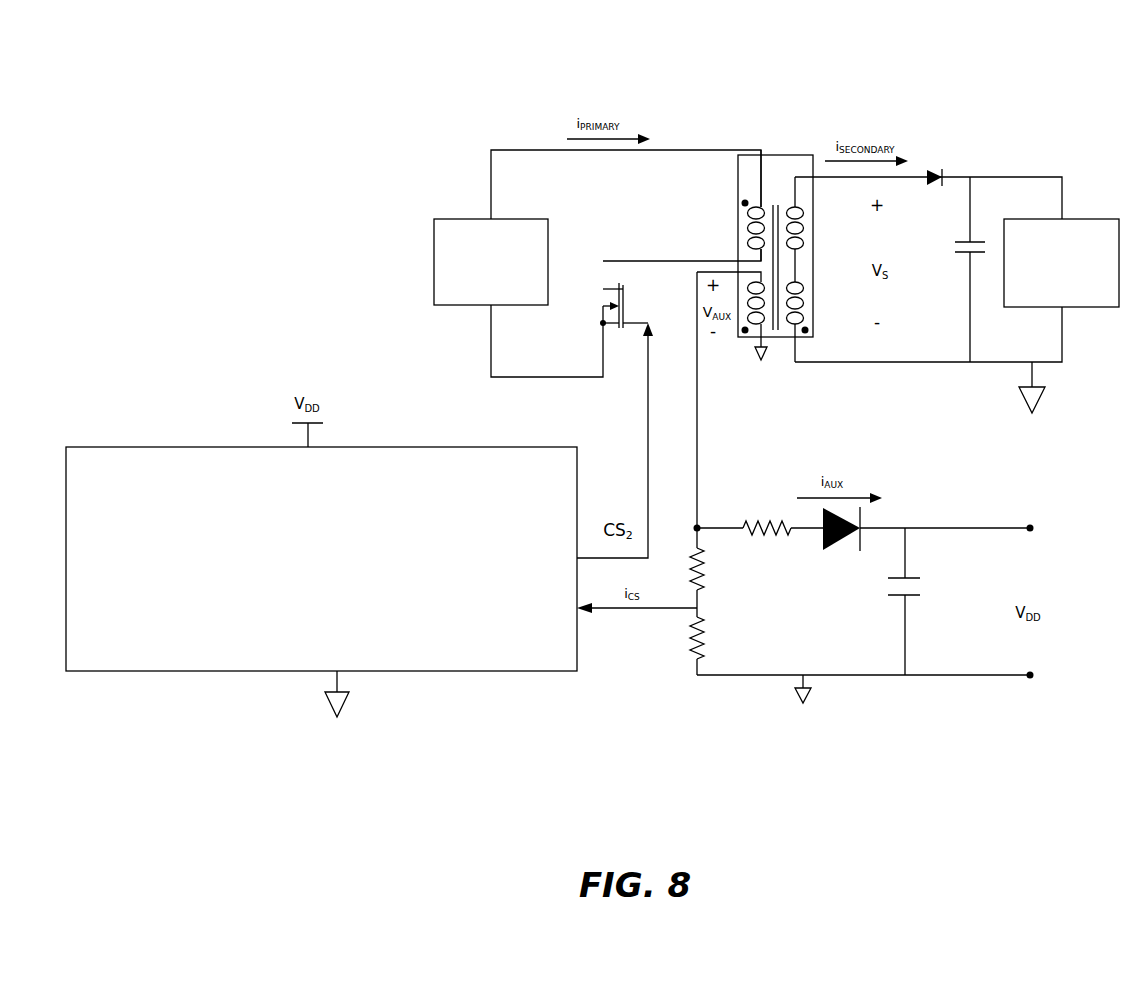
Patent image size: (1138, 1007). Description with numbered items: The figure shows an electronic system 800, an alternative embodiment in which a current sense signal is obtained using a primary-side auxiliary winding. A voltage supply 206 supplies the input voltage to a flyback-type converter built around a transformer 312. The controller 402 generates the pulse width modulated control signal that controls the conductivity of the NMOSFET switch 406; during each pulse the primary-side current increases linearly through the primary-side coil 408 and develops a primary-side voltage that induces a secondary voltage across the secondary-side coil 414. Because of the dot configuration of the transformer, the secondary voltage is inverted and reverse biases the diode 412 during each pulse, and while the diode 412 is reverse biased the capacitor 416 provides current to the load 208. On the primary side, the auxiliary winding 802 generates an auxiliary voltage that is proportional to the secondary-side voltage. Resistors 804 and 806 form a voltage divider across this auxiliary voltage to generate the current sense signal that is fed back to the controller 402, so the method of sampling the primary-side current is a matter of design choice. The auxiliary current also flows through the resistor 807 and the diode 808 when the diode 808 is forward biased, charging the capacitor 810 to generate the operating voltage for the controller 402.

The electronic system 800 is at (1096, 96).
The voltage supply 206 is at (436, 259).
The transformer 312 is at (762, 246).
The primary-side coil 408 is at (739, 233).
The secondary-side coil 414 is at (803, 297).
The auxiliary winding 802 is at (762, 316).
The NMOSFET switch 406 is at (632, 318).
The diode 412 is at (931, 169).
The capacitor 416 is at (957, 254).
The load 208 is at (1061, 263).
The controller 402 is at (321, 559).
The resistor 804 is at (703, 553).
The resistor 806 is at (703, 620).
The resistor 807 is at (761, 522).
The diode 808 is at (835, 546).
The capacitor 810 is at (919, 598).